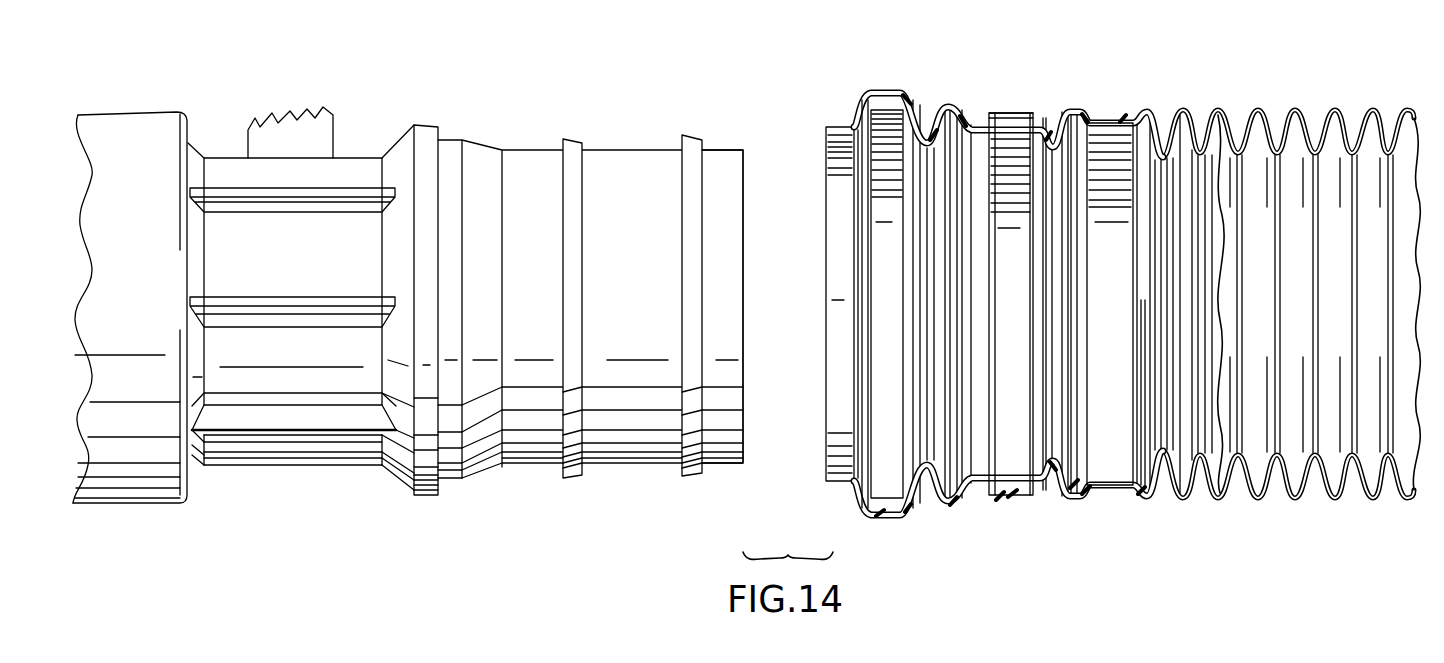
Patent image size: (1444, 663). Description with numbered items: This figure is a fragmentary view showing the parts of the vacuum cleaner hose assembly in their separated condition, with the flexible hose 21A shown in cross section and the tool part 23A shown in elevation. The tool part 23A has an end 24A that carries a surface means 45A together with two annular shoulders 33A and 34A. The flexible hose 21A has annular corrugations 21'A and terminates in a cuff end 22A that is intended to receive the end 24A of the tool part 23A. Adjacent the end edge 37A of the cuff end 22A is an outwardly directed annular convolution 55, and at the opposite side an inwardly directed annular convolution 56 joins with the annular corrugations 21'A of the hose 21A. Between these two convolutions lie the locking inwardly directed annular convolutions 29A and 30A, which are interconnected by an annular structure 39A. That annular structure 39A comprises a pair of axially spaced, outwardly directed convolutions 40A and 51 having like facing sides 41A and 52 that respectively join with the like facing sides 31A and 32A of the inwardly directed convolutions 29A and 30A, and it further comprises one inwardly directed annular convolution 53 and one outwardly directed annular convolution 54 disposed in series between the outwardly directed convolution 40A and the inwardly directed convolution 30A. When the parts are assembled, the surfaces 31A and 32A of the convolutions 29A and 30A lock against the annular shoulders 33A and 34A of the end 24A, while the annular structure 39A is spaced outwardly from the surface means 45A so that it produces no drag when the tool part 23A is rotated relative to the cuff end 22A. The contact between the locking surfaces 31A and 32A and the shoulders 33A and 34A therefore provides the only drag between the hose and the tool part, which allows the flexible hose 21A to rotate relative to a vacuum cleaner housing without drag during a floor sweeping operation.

The tool part 23A is at (121, 118).
The surface means 45A is at (635, 160).
The end 24A is at (727, 157).
The annular shoulder 33A is at (563, 303).
The annular shoulder 34A is at (682, 302).
The end edge 37A is at (824, 133).
The outwardly directed annular convolution 55 is at (886, 95).
The outwardly directed convolution 40A is at (947, 103).
The facing side 31A is at (960, 105).
The inwardly directed annular convolution 53 is at (978, 116).
The annular structure 39A is at (1000, 112).
The cuff end 22A is at (1018, 113).
The outwardly directed convolution 51 is at (1070, 110).
The facing side 32A is at (1090, 123).
The inwardly directed annular convolution 56 is at (1120, 118).
The flexible hose 21A is at (1395, 115).
The inwardly directed annular convolution 29A is at (930, 152).
The inwardly directed annular convolution 30A is at (1037, 152).
The facing side 41A is at (963, 490).
The outwardly directed annular convolution 54 is at (1015, 500).
The facing side 52 is at (1093, 497).
The annular corrugations 21'A is at (1184, 339).